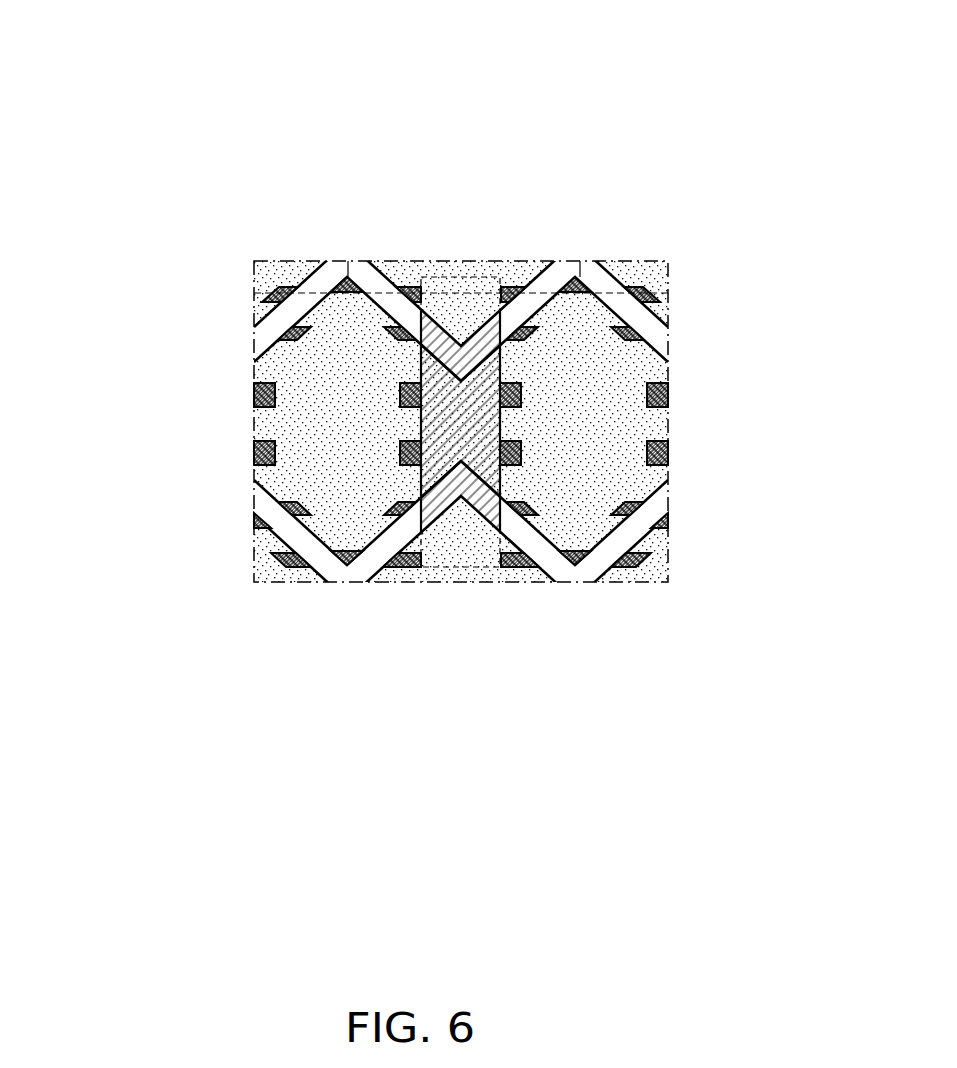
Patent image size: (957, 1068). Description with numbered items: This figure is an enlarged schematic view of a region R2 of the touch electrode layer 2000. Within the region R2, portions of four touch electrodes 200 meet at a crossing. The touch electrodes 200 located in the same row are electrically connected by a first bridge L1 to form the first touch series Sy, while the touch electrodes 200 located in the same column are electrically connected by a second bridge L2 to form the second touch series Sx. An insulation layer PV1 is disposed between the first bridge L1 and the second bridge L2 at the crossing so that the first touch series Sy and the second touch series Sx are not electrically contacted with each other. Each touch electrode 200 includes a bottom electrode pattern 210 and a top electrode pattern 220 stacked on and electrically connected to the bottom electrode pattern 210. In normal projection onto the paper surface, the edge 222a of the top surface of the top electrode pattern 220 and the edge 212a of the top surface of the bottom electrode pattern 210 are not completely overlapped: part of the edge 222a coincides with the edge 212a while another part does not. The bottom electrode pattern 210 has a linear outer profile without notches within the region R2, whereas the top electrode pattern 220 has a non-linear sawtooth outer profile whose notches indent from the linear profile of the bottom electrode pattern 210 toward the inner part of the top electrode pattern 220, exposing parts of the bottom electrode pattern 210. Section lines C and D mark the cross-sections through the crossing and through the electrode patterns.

The touch electrode 200 is at (461, 395).
The bottom electrode pattern 210 is at (523, 293).
The top electrode pattern 220 is at (517, 290).
The edge of the top surface of the bottom electrode pattern 212a is at (385, 288).
The edge of the top surface of the top electrode pattern 222a is at (416, 286).
The insulation layer PV1 is at (461, 276).
The region R2 is at (652, 260).
The first bridge L1 is at (497, 512).
The second bridge L2 is at (504, 478).
The second touch series Sx is at (461, 111).
The first touch series Sy is at (154, 458).
The touch electrode layer 2000 is at (785, 773).
The section line C-C' C is at (348, 258).
The section line D-D' D is at (722, 421).